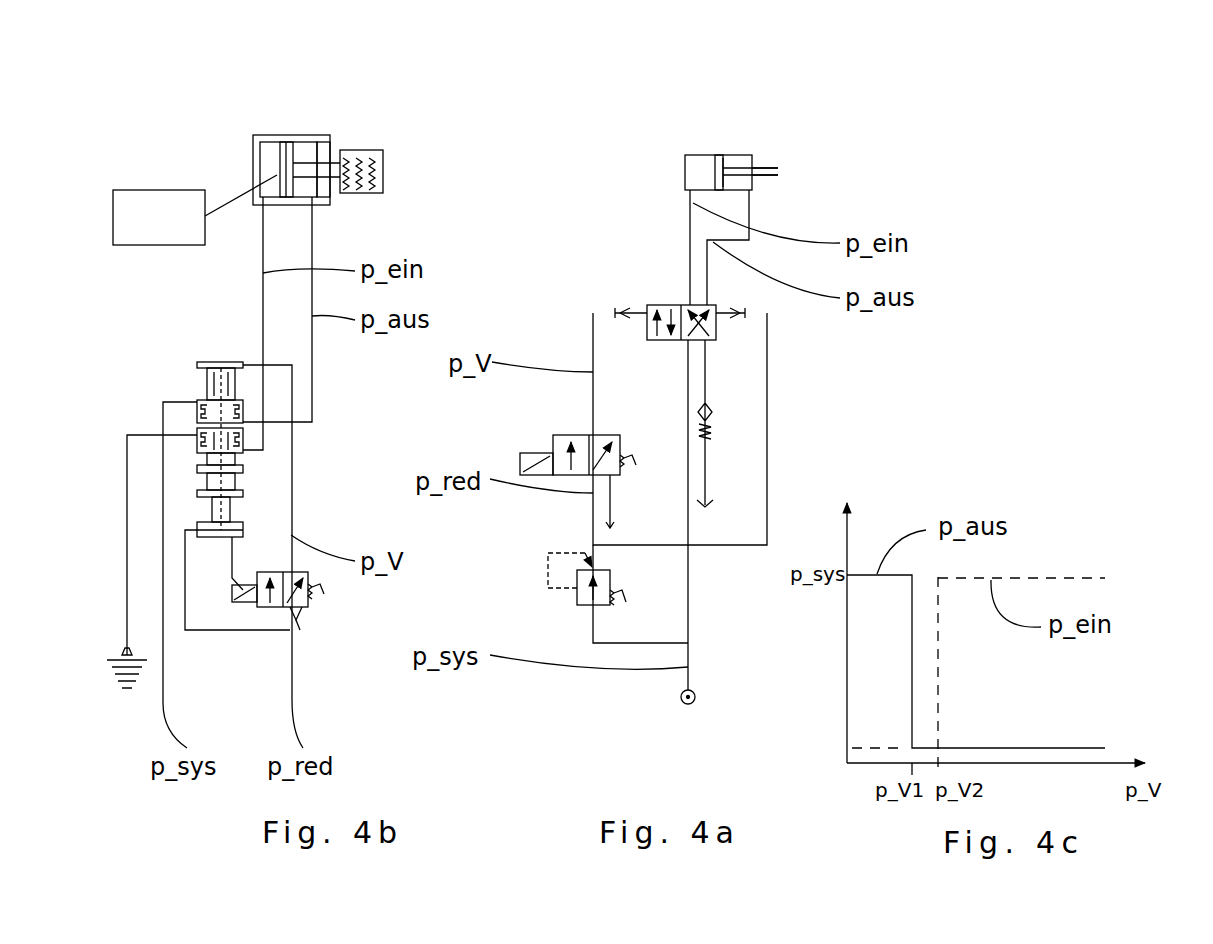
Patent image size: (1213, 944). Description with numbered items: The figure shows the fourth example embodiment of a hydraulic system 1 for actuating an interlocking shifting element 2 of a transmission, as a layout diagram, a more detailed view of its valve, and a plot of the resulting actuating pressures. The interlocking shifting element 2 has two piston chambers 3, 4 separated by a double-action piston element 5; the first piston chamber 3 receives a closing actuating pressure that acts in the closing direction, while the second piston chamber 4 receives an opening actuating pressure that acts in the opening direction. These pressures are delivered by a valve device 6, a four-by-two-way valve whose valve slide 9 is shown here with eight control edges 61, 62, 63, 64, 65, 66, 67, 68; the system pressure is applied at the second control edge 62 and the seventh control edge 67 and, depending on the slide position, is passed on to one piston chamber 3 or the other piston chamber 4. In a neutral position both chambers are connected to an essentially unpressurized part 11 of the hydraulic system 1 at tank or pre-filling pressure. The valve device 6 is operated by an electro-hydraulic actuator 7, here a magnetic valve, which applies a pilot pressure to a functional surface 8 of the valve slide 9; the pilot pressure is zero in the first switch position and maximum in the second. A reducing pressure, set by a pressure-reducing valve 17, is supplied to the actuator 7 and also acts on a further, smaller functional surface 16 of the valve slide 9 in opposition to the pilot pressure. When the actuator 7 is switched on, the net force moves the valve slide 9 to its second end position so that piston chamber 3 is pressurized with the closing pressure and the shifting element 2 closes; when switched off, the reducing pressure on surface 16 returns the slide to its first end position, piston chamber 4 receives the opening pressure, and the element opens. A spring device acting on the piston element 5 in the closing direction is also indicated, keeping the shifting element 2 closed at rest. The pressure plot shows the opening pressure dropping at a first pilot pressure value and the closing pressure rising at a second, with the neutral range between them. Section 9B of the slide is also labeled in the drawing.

In FIG. 4b, the hydraulic system 1 is at (190, 172).
In FIG. 4a, the hydraulic system 1 is at (555, 182).
In FIG. 4b, the interlocking shifting element 2 is at (392, 158).
In FIG. 4a, the interlocking shifting element 2 is at (773, 155).
In FIG. 4b, the piston chamber 3 is at (268, 153).
In FIG. 4a, the piston chamber 3 is at (698, 172).
In FIG. 4b, the piston chamber 4 is at (318, 152).
In FIG. 4a, the piston chamber 4 is at (737, 160).
In FIG. 4b, the double-action piston element 5 is at (285, 150).
In FIG. 4a, the double-action piston element 5 is at (717, 162).
In FIG. 4b, the valve device 6 is at (219, 499).
In FIG. 4a, the valve device 6 is at (583, 313).
In FIG. 4b, the electro-hydraulic actuator 7 is at (323, 606).
In FIG. 4a, the electro-hydraulic actuator 7 is at (540, 443).
In FIG. 4b, the functional surface 8 is at (207, 360).
In FIG. 4b, the valve slide 9 is at (203, 387).
In FIG. 4b, the valve spool section 9B is at (203, 432).
In FIG. 4b, the essentially unpressurized part 11 is at (121, 688).
In FIG. 4a, the essentially unpressurized part 11 is at (706, 500).
In FIG. 4b, the further functional surface 16 is at (205, 530).
In FIG. 4a, the pressure-reducing valve 17 is at (577, 590).
In FIG. 4b, the control edge 61 is at (243, 365).
In FIG. 4b, the control edge 62 is at (243, 403).
In FIG. 4b, the control edge 63 is at (243, 425).
In FIG. 4b, the control edge 64 is at (200, 438).
In FIG. 4b, the control edge 65 is at (243, 456).
In FIG. 4b, the control edge 66 is at (200, 468).
In FIG. 4b, the control edge 67 is at (200, 495).
In FIG. 4b, the control edge 68 is at (235, 560).